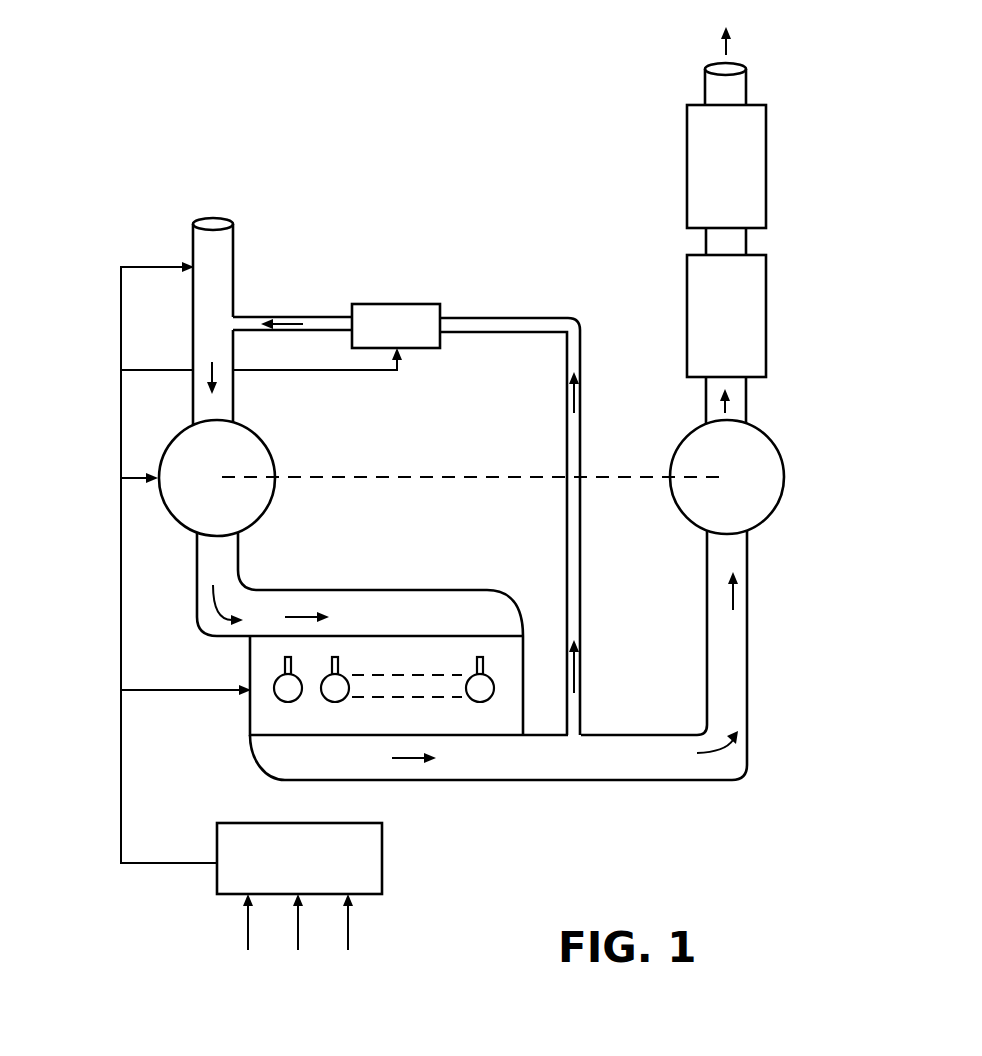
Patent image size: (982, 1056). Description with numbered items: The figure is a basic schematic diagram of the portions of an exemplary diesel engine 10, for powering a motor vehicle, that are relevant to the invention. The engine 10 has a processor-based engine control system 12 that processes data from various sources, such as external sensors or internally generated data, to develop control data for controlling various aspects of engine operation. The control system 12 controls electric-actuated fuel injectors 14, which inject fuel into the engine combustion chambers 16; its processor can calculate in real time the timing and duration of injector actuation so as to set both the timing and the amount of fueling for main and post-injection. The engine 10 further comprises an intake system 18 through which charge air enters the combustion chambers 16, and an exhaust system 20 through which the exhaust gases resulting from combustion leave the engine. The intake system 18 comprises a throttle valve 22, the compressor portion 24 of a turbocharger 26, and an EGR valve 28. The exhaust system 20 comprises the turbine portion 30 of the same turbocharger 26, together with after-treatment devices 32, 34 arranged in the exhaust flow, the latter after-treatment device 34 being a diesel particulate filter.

The diesel engine 10 is at (488, 845).
The engine control system 12 is at (305, 823).
The fuel injectors 14 is at (285, 665).
The combustion chambers 16 is at (275, 693).
The intake system 18 is at (195, 590).
The exhaust system 20 is at (747, 643).
The throttle valve 22 is at (213, 255).
The compressor portion 24 is at (167, 443).
The turbocharger 26 is at (385, 477).
The EGR valve 28 is at (420, 304).
The turbine portion 30 is at (777, 450).
The after-treatment device 32 is at (725, 313).
The after-treatment device (DPF) 34 is at (732, 163).